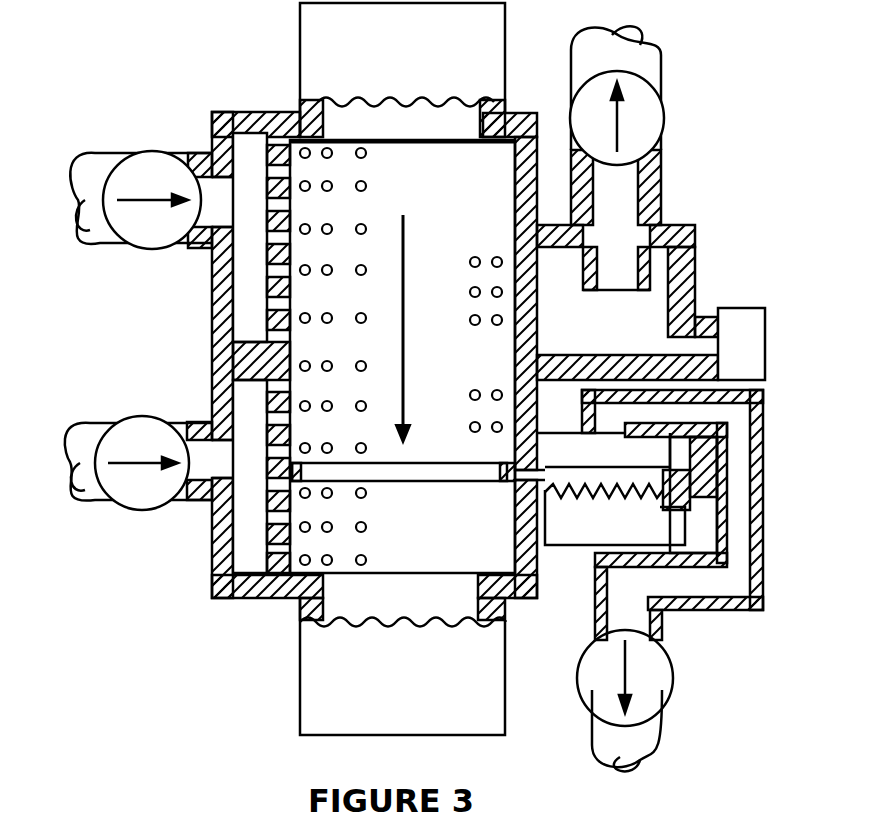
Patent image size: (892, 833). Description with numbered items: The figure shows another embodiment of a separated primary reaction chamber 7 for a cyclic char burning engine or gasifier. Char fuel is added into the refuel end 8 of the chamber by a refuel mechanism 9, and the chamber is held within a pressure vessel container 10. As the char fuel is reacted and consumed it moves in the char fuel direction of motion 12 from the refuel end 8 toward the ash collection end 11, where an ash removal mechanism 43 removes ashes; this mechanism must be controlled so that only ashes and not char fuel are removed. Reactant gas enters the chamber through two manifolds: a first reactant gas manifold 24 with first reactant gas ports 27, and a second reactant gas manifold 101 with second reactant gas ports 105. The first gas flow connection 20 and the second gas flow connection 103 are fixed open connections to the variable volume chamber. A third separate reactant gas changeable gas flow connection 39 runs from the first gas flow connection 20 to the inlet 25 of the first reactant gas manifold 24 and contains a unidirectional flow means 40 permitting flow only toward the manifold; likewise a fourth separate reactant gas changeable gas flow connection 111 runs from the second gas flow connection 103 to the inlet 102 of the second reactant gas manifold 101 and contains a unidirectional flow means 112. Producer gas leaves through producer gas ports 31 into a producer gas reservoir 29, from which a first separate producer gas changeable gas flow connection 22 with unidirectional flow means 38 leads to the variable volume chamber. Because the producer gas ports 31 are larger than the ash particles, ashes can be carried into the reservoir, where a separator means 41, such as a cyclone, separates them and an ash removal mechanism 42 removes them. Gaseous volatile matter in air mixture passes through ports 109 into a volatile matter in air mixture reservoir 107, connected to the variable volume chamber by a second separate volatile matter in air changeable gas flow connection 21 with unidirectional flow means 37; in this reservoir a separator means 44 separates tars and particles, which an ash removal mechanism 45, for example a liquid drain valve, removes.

The primary reaction chamber 7 is at (418, 173).
The refuel end 8 is at (457, 160).
The refuel mechanism 9 is at (330, 27).
The pressure vessel container 10 is at (218, 298).
The ash collection end 11 is at (300, 607).
The char fuel direction of motion 12 is at (290, 338).
The first gas flow connection 20 is at (82, 465).
The second separate volatile matter in air changeable gas flow connection 21 is at (620, 45).
The first separate producer gas changeable gas flow connection 22 is at (635, 742).
The first reactant gas manifold 24 is at (247, 510).
The inlet of the first reactant gas manifold 25 is at (200, 503).
The first reactant gas ports 27 is at (267, 528).
The producer gas reservoir 29 is at (580, 448).
The producer gas ports 31 is at (523, 427).
The unidirectional flow means 37 is at (635, 118).
The unidirectional flow means 38 is at (650, 692).
The third separate reactant gas changeable gas flow connection 39 is at (200, 462).
The unidirectional flow means 40 is at (130, 484).
The separator means 41 is at (620, 417).
The ash removal mechanism 42 is at (607, 527).
The ash removal mechanism 43 is at (318, 702).
The separator means 44 is at (615, 278).
The ash removal mechanism 45 is at (752, 297).
The second reactant gas manifold 101 is at (247, 305).
The inlet of the second reactant gas manifold 102 is at (248, 203).
The second gas flow connection 103 is at (95, 178).
The second reactant gas ports 105 is at (222, 197).
The volatile matter in air mixture reservoir 107 is at (620, 316).
The ports 109 is at (540, 280).
The fourth separate reactant gas changeable gas flow connection 111 is at (212, 194).
The unidirectional flow means 112 is at (145, 175).